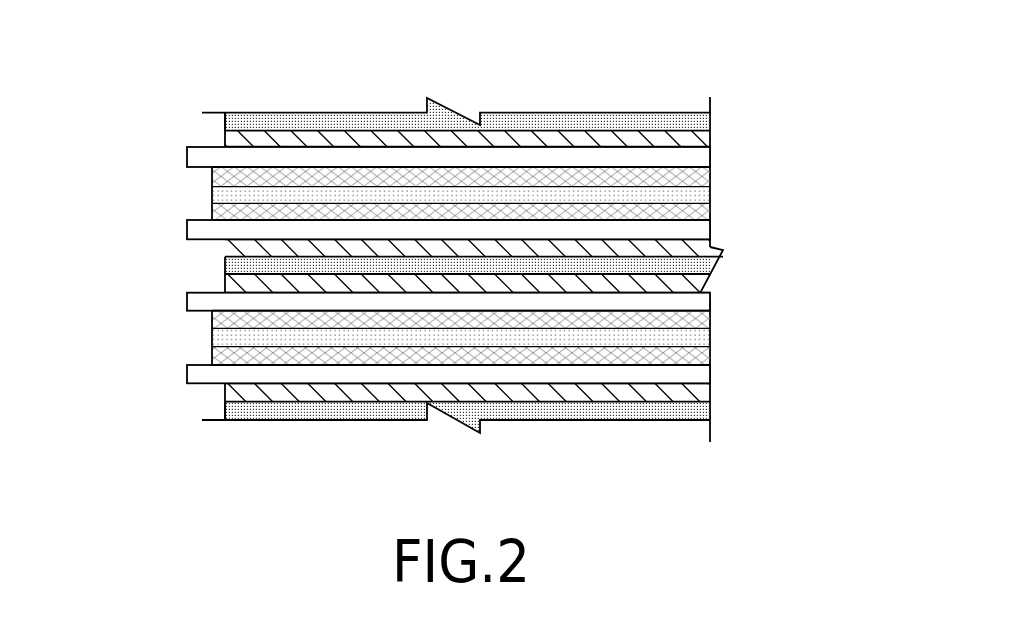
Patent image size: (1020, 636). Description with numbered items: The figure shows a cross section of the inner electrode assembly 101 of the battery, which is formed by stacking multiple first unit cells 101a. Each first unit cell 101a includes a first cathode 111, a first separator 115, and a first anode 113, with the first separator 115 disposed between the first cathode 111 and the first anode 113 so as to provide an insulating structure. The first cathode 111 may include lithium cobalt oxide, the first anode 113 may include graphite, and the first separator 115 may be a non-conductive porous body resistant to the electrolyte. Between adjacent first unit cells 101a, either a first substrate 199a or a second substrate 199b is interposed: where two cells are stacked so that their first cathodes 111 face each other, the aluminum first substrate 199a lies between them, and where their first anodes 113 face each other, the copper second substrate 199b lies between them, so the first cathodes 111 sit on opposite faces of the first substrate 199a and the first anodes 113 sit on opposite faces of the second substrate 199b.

The inner electrode assembly 101 is at (668, 72).
The first unit cell 101a is at (113, 108).
The first cathode 111 is at (225, 141).
The first anode 113 is at (213, 174).
The first separator 115 is at (197, 159).
The first substrate 199a is at (575, 118).
The second substrate 199b is at (688, 193).